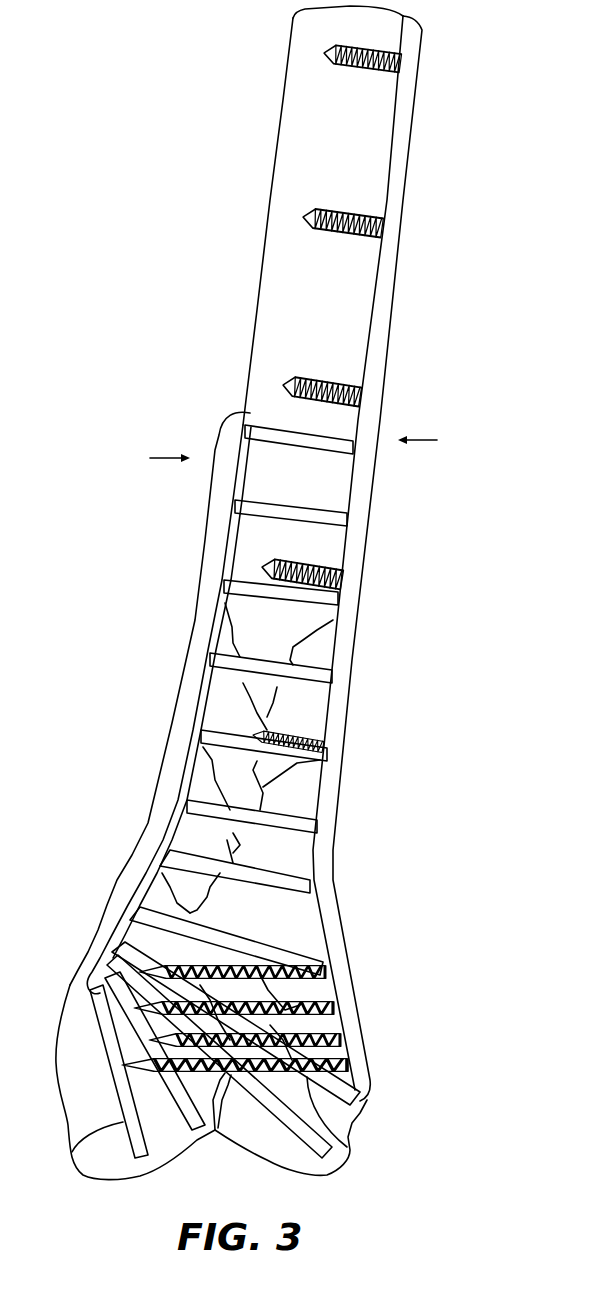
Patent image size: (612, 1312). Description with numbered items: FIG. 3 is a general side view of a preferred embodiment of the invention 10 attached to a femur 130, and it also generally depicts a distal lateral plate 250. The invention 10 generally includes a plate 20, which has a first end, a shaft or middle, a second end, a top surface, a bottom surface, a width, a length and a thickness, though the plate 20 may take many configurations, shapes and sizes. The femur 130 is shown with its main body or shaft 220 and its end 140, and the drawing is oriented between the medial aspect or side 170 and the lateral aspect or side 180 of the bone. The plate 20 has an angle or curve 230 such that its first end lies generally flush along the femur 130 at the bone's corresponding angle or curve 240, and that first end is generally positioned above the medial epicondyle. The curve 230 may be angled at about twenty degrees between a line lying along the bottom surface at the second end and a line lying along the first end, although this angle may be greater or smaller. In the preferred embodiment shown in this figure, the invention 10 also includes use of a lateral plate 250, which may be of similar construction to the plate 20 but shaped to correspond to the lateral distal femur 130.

The invention 10 is at (208, 151).
The plate 20 is at (193, 633).
The femur 130 is at (92, 1162).
The end 140 is at (350, 1123).
The medial aspect or side 170 is at (135, 473).
The lateral aspect or side 180 is at (454, 453).
The main body or shaft 220 is at (268, 308).
The angle or curve 230 is at (110, 921).
The corresponding angle or curve 240 is at (150, 880).
The lateral plate 250 is at (323, 850).